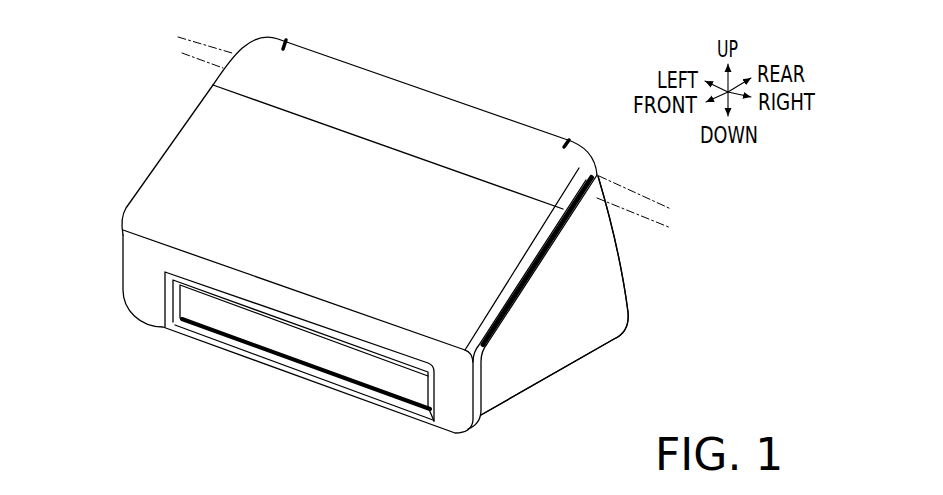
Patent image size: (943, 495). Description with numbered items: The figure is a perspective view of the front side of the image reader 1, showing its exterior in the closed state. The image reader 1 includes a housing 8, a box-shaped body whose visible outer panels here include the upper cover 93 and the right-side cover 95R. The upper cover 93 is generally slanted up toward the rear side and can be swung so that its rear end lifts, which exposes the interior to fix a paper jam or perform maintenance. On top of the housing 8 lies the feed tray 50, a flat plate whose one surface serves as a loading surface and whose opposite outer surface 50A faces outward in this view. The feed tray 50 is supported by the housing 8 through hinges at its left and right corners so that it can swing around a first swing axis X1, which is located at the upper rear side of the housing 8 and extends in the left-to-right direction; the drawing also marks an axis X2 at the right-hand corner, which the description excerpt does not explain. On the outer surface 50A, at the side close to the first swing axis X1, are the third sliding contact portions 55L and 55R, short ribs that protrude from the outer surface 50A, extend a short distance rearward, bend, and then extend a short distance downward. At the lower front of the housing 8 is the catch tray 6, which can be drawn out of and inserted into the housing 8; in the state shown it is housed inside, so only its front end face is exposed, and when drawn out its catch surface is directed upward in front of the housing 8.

The image reader 1 is at (147, 98).
The feed tray 50 is at (188, 187).
The outer surface 50A is at (413, 113).
The third sliding contact portion 55L is at (284, 43).
The third sliding contact portion 55R is at (567, 138).
The first swing axis X1 is at (192, 42).
The right rotation axis X2 is at (648, 211).
The housing 8 is at (631, 289).
The catch tray 6 is at (272, 363).
The upper cover 93 is at (510, 308).
The right-side cover 95R is at (582, 337).